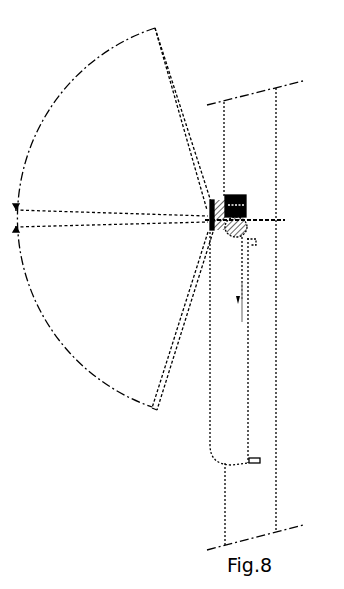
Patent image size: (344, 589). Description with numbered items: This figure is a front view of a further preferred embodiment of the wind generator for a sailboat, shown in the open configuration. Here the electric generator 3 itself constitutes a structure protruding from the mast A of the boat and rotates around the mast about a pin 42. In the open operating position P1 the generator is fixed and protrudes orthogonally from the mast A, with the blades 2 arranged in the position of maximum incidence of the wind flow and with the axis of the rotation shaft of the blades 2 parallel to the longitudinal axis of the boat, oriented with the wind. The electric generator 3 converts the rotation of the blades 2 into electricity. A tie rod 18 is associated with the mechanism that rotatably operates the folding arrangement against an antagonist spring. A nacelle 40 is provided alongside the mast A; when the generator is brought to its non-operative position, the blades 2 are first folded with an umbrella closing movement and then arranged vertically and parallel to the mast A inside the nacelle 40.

The blades 2 is at (175, 341).
The electric generator 3 is at (247, 194).
The tie rod 18 is at (243, 292).
The nacelle 40 is at (211, 423).
The pin 42 is at (244, 237).
The mast A is at (276, 120).
The open operating position P1 is at (255, 124).